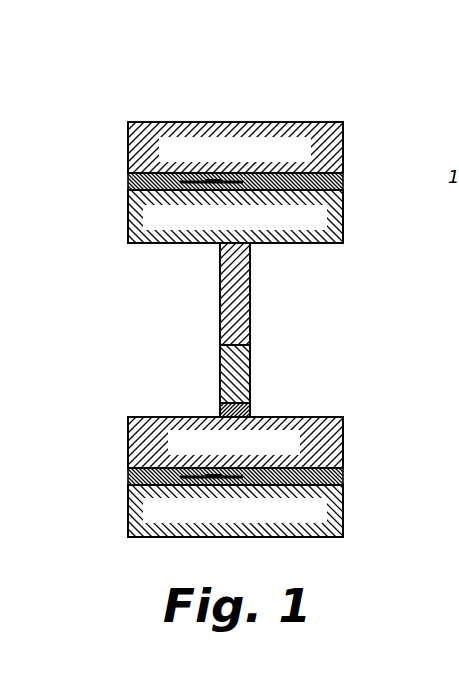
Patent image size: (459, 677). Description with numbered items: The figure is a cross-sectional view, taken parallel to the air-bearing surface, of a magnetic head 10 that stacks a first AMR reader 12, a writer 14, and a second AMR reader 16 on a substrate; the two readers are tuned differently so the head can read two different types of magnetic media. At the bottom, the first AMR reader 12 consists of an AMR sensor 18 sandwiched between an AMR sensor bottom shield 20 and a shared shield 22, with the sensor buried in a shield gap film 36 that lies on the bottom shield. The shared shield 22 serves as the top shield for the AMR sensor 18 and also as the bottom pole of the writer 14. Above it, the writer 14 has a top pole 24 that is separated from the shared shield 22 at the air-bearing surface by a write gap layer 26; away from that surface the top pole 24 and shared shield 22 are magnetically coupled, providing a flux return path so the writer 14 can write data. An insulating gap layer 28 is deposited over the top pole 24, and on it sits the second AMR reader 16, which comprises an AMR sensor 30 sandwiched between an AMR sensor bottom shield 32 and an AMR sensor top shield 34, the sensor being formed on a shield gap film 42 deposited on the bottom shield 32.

The magnetic head 10 is at (297, 72).
The first AMR reader 12 is at (113, 418).
The writer 14 is at (91, 345).
The second AMR reader 16 is at (62, 122).
The AMR sensor 18 is at (180, 478).
The AMR sensor bottom shield 20 is at (343, 512).
The shared shield 22 is at (343, 437).
The top pole 24 is at (250, 372).
The write gap layer 26 is at (262, 406).
The insulating gap layer 28 is at (262, 275).
The AMR sensor 30 is at (180, 181).
The AMR sensor bottom shield 32 is at (343, 220).
The AMR sensor top shield 34 is at (343, 143).
The shield gap film 36 is at (343, 478).
The shield gap film 42 is at (343, 183).